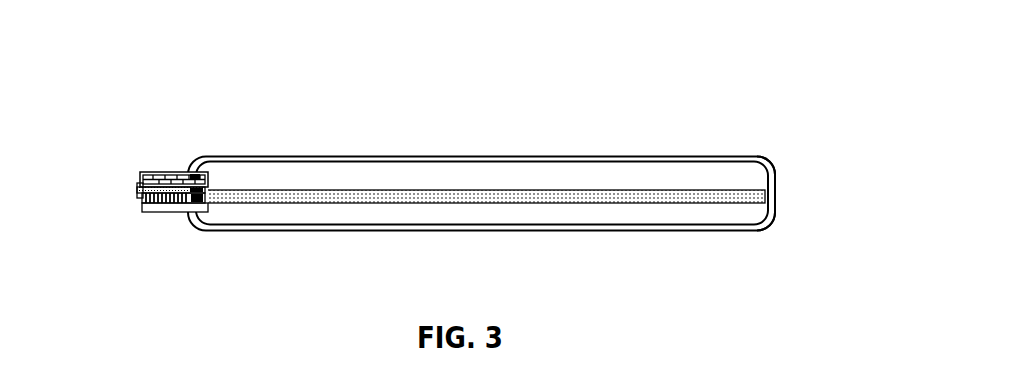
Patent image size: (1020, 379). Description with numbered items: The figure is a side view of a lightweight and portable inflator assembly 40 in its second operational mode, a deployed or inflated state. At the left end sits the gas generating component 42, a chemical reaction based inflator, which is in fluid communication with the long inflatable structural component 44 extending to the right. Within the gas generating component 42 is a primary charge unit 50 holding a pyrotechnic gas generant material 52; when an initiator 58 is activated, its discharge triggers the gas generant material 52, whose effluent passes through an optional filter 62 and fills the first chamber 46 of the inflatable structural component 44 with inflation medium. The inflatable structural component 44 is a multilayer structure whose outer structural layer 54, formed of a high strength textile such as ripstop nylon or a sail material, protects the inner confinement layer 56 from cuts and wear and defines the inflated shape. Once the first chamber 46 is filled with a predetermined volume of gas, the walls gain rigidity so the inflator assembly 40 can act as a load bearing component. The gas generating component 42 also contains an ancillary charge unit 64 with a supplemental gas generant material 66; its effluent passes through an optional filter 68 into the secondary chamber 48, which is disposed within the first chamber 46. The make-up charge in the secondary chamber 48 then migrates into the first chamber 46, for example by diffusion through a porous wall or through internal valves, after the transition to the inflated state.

The inflator assembly 40 is at (174, 97).
The gas generating component 42 is at (140, 176).
The inflatable structural component 44 is at (456, 156).
The first chamber 46 is at (370, 217).
The secondary chamber 48 is at (437, 194).
The primary charge unit 50 is at (140, 188).
The gas generant material 52 is at (163, 183).
The outer structural layer 54 is at (774, 177).
The inner confinement layer 56 is at (738, 158).
The initiator 58 is at (137, 193).
The filter 62 is at (184, 177).
The ancillary charge unit 64 is at (141, 205).
The supplemental gas generant material 66 is at (171, 204).
The filter 68 is at (192, 205).